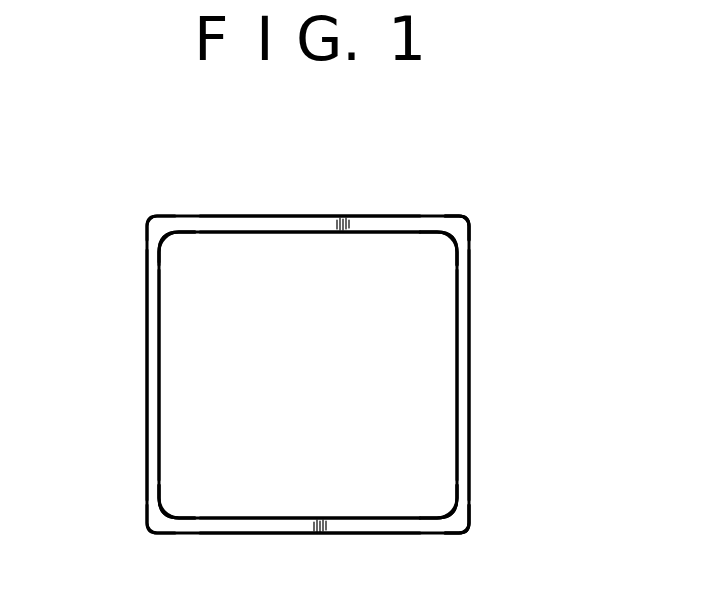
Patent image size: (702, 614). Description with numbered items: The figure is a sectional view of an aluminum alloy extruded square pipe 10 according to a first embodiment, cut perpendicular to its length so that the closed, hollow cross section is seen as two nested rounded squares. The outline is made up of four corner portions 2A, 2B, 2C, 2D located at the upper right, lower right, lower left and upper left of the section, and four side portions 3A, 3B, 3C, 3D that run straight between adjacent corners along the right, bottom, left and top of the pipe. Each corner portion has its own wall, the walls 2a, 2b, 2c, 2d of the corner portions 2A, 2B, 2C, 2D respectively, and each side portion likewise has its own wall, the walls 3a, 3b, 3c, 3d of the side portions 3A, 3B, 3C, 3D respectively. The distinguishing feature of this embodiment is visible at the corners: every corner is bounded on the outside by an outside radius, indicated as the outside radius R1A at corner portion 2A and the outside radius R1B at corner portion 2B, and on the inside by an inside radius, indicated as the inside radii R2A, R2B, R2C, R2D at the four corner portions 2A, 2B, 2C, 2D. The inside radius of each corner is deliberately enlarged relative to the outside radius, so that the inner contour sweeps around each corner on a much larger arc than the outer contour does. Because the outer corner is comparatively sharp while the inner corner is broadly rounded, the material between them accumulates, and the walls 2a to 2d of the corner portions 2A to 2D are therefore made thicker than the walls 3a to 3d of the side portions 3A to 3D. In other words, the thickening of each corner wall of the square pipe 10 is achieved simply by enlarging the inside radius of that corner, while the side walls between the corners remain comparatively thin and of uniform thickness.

The square pipe 10 is at (412, 177).
The corner portion 2A is at (490, 212).
The corner portion 2B is at (478, 550).
The corner portion 2C is at (145, 546).
The corner portion 2D is at (126, 214).
The wall of corner portion 2a is at (460, 236).
The wall of corner portion 2b is at (455, 522).
The wall of corner portion 2c is at (161, 520).
The wall of corner portion 2d is at (157, 224).
The side portion 3A is at (470, 401).
The side portion 3B is at (355, 535).
The side portion 3C is at (147, 401).
The side portion 3D is at (272, 215).
The wall of side portion 3a is at (460, 340).
The wall of side portion 3b is at (280, 525).
The wall of side portion 3c is at (154, 342).
The wall of side portion 3d is at (364, 222).
The outside radius of corner portion R1A is at (467, 219).
The outside radius of corner portion R1B is at (470, 530).
The inside radius of corner portion R2A is at (447, 240).
The inside radius of corner portion R2B is at (452, 506).
The inside radius of corner portion R2C is at (173, 513).
The inside radius of corner portion R2D is at (167, 238).